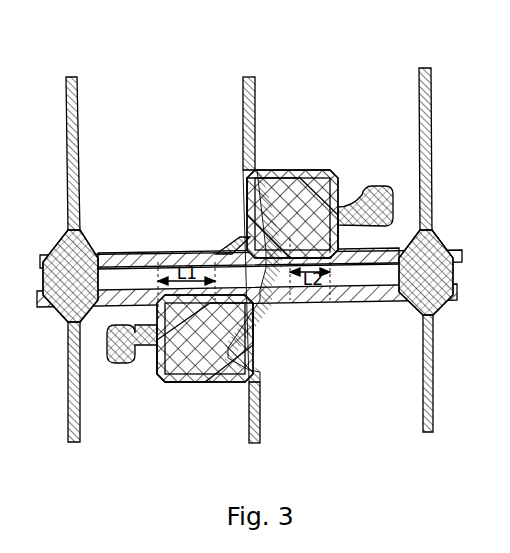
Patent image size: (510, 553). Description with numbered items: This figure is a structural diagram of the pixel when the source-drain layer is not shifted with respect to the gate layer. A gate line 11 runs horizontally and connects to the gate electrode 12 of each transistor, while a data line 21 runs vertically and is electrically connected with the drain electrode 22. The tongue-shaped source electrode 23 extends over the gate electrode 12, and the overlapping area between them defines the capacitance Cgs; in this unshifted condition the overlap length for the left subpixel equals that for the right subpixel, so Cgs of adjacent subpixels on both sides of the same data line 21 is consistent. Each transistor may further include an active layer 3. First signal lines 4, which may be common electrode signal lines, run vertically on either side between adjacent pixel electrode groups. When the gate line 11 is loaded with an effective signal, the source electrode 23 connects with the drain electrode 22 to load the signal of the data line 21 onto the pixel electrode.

The active layer 3 is at (241, 271).
The first signal line 4 is at (73, 75).
The gate line 11 is at (127, 251).
The gate electrode 12 is at (336, 178).
The data line 21 is at (252, 77).
The drain electrode 22 is at (285, 176).
The source electrode 23 is at (378, 195).